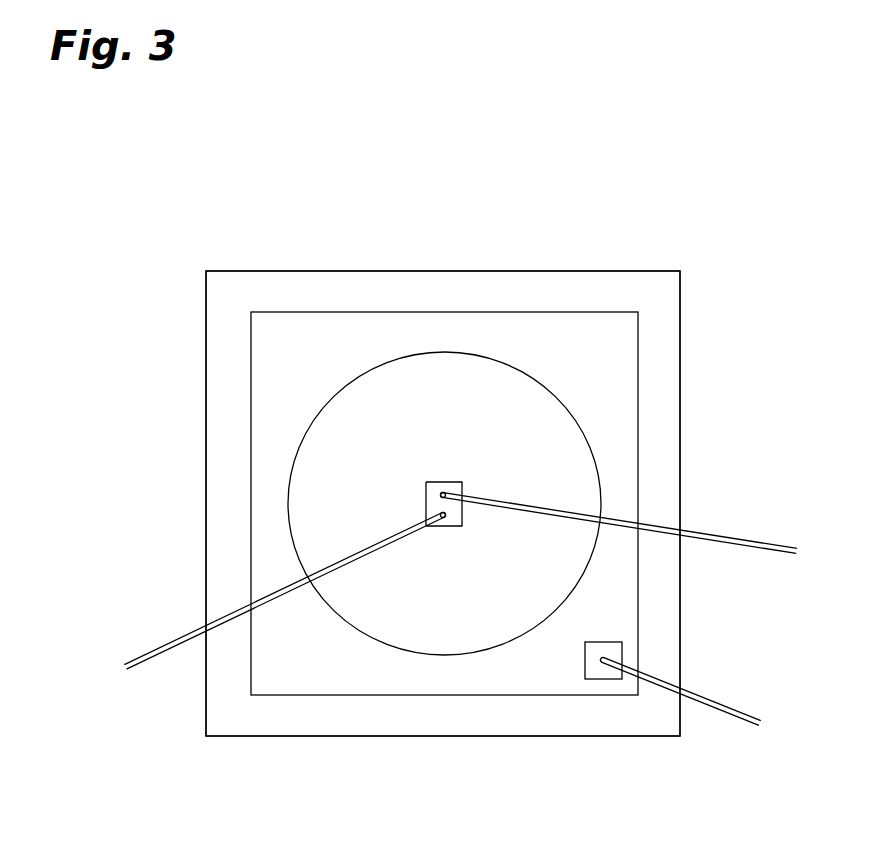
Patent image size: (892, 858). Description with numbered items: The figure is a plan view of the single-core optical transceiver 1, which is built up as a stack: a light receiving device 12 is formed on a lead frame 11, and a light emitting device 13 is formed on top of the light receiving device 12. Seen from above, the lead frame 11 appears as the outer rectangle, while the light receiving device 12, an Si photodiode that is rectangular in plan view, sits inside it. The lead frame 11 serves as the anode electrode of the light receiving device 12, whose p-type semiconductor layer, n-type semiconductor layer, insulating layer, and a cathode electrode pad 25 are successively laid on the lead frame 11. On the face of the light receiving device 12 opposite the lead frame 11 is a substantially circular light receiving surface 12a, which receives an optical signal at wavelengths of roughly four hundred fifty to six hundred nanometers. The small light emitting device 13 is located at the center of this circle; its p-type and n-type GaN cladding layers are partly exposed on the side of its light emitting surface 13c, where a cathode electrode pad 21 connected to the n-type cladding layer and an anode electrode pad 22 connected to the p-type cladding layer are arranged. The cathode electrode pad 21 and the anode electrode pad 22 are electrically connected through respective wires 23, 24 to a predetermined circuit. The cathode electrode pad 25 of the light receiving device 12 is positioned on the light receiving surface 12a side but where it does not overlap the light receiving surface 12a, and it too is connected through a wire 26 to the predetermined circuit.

The single-core optical transceiver 1 is at (194, 218).
The lead frame 11 is at (218, 511).
The light receiving device 12 is at (243, 343).
The light receiving surface 12a is at (355, 400).
The light emitting device 13 is at (462, 470).
The light emitting surface 13c is at (430, 497).
The cathode electrode pad 21 is at (443, 490).
The anode electrode pad 22 is at (444, 522).
The wire 23 is at (658, 523).
The wire 24 is at (228, 617).
The cathode electrode pad 25 is at (603, 656).
The wire 26 is at (662, 682).